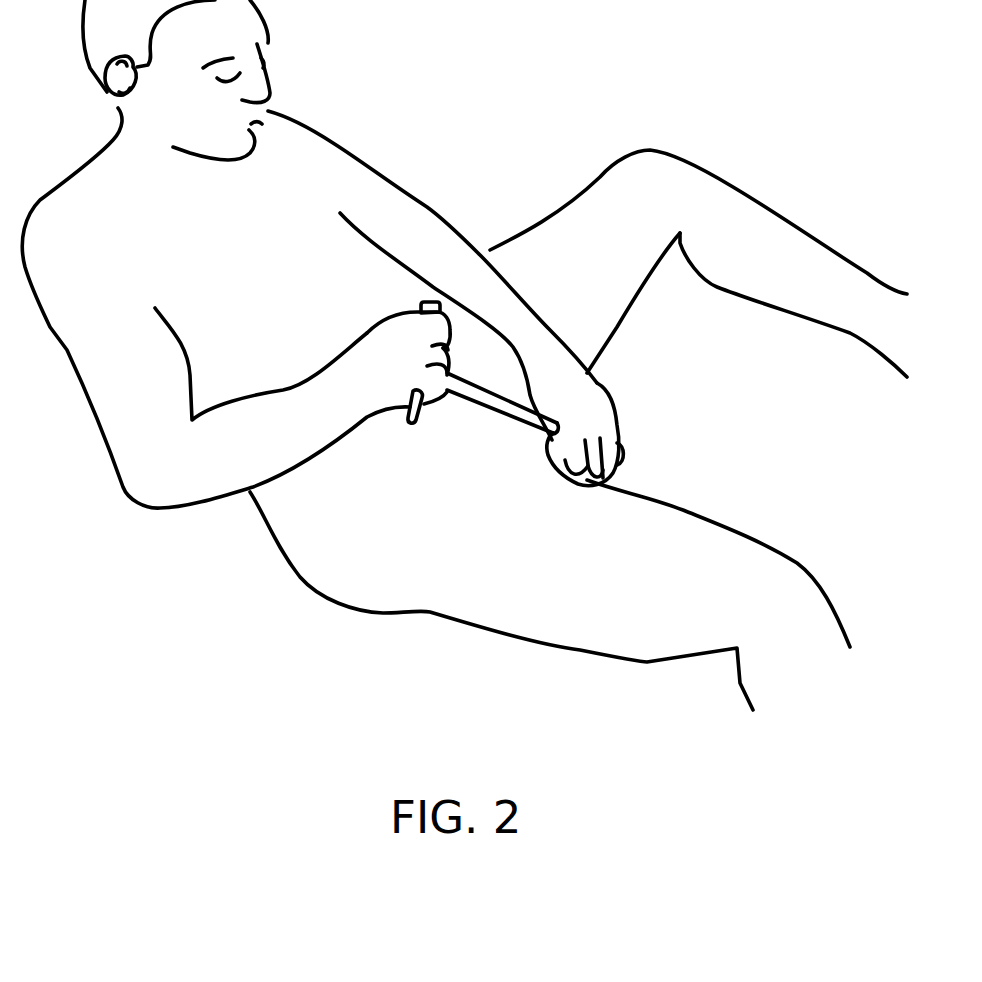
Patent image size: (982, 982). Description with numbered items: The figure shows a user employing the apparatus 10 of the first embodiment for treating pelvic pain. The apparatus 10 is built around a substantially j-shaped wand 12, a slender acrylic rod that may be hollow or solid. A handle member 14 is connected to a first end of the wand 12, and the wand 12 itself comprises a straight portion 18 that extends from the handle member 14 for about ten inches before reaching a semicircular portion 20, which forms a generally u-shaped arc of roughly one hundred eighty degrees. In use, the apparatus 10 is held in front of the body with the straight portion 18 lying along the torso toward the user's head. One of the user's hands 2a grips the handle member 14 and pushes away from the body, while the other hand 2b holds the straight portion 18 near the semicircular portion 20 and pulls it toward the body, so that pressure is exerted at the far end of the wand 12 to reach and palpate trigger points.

The user's hand 2a is at (372, 327).
The user's other hand 2b is at (600, 385).
The apparatus 10 is at (551, 449).
The wand 12 is at (463, 397).
The handle member 14 is at (413, 428).
The straight portion 18 is at (528, 420).
The semicircular portion 20 is at (623, 455).